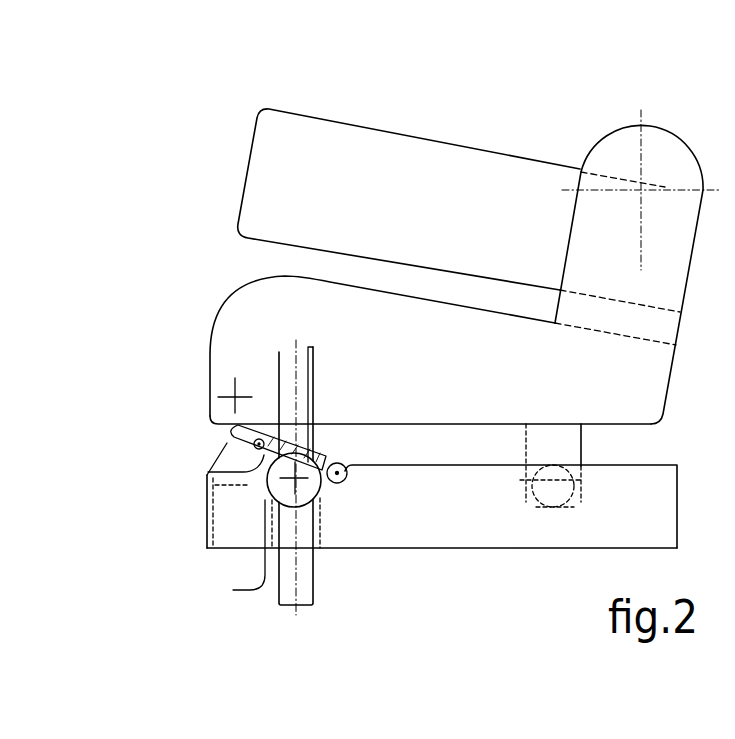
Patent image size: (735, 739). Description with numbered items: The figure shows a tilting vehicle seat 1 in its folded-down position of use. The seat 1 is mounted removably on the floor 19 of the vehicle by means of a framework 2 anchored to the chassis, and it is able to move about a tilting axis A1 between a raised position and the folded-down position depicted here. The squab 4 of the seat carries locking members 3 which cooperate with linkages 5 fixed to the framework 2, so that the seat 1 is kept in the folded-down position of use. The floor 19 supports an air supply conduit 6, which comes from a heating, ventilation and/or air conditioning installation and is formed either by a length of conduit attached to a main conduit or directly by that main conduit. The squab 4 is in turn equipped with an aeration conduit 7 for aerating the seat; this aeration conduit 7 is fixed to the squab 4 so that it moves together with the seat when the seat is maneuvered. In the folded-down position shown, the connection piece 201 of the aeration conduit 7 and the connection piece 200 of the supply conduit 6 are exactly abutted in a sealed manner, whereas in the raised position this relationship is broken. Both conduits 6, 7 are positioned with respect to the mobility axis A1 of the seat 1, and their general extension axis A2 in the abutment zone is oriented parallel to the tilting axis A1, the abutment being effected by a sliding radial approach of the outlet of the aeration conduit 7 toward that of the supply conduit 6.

The seat 1 is at (463, 100).
The framework 2 is at (442, 506).
The locking members 3 is at (221, 440).
The squab 4 is at (228, 310).
The linkages 5 is at (212, 470).
The air supply conduit 6 is at (320, 571).
The aeration conduit 7 is at (315, 355).
The floor 19 is at (485, 550).
The connection piece of the supply conduit 200 is at (320, 498).
The connection piece of the aeration conduit 201 is at (294, 478).
The tilting axis A1 is at (235, 383).
The general extension axis of the conduit A2 is at (214, 554).